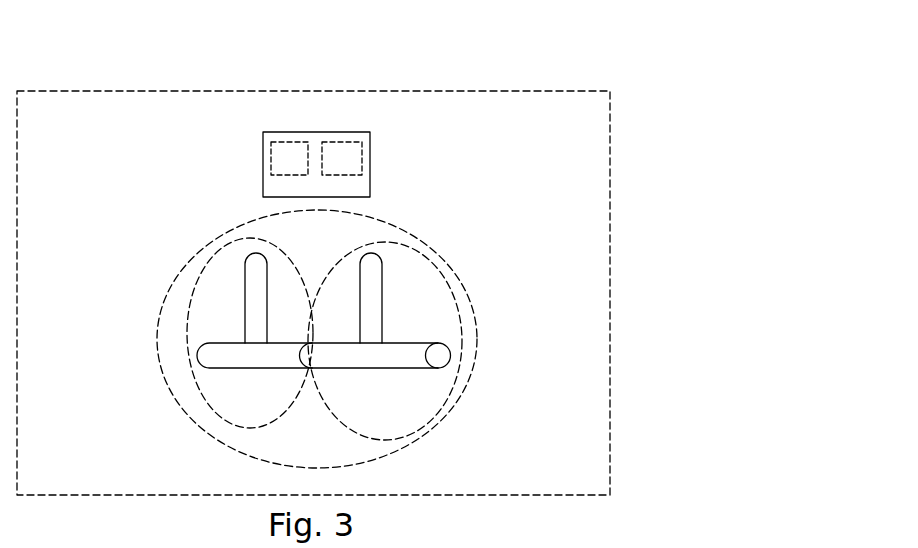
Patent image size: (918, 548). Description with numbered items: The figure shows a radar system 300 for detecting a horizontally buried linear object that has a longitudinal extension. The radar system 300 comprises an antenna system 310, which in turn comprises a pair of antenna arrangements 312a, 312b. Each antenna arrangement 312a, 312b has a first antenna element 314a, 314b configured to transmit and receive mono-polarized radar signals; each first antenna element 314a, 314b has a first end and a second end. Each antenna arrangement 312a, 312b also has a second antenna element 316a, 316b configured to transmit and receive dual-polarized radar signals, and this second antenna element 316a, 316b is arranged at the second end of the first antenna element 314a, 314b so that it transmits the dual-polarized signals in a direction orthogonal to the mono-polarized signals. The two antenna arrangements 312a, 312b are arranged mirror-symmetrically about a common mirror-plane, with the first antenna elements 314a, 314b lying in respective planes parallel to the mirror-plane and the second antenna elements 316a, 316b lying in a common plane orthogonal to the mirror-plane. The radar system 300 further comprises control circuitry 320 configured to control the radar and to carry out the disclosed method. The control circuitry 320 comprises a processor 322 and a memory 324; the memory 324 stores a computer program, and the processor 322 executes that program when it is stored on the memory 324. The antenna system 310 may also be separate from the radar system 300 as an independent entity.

The radar system 300 is at (403, 76).
The antenna system 310 is at (414, 232).
The antenna arrangement 312a is at (208, 260).
The antenna arrangement 312b is at (445, 276).
The first antenna element 314a is at (245, 300).
The first antenna element 314b is at (382, 307).
The second antenna element 316a is at (197, 360).
The second antenna element 316b is at (440, 357).
The control circuitry 320 is at (370, 133).
The processor 322 is at (271, 150).
The memory 324 is at (362, 160).